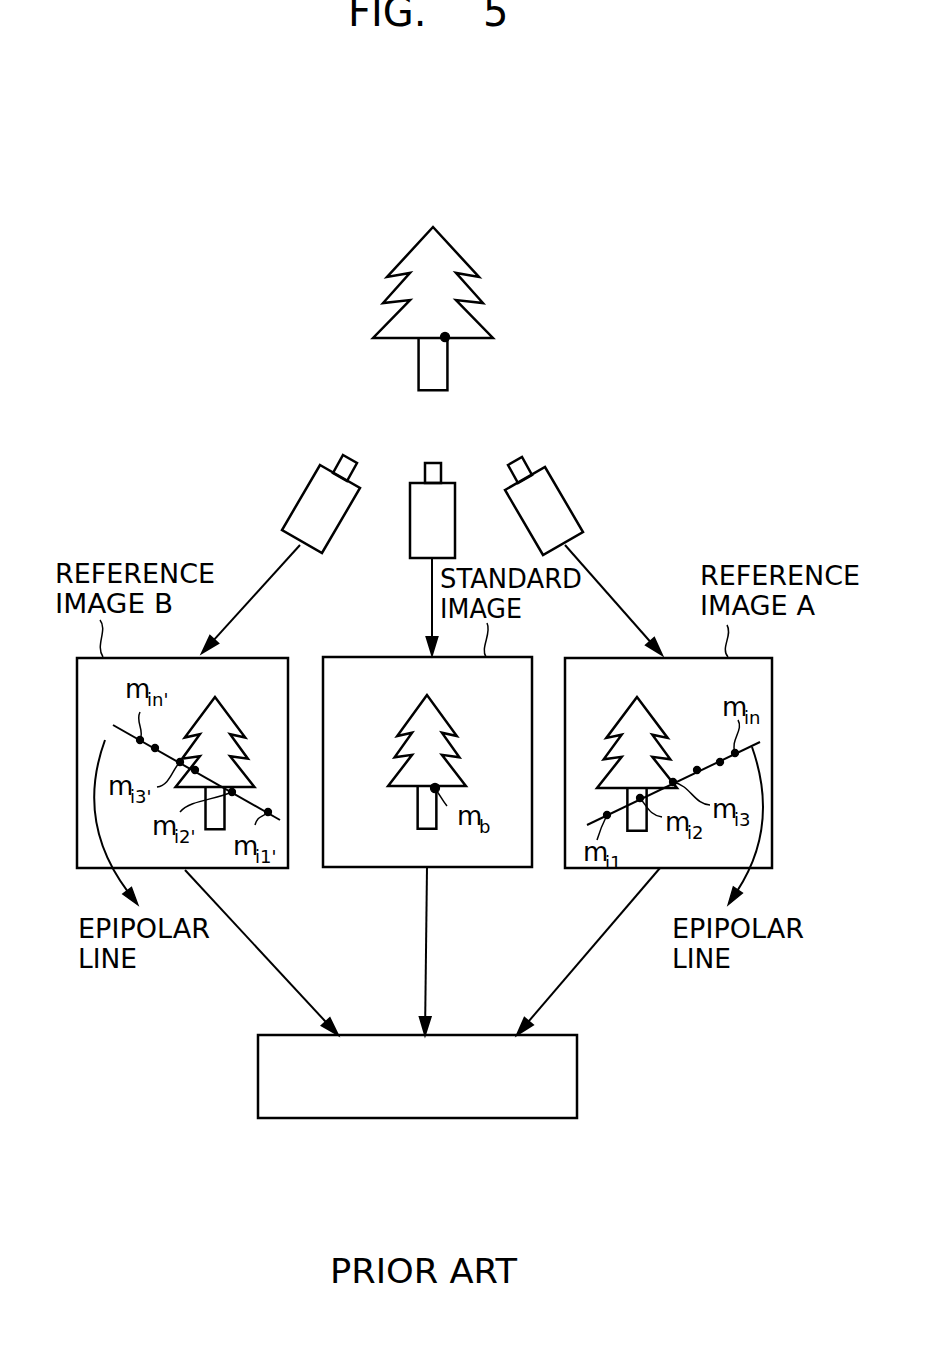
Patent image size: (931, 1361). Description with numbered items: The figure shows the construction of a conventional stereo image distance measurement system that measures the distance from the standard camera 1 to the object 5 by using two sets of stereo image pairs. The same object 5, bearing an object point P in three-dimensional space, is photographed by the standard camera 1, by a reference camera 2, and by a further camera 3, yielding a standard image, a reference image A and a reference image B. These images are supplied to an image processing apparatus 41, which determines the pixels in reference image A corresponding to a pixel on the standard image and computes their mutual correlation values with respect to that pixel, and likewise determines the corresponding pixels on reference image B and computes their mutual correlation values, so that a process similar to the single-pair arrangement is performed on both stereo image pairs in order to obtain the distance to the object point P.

The standard camera 1 is at (410, 533).
The reference camera 2 is at (565, 497).
The reference camera B 3 is at (305, 490).
The object 5 is at (448, 243).
The object point P is at (450, 342).
The image processing apparatus 41 is at (513, 1120).